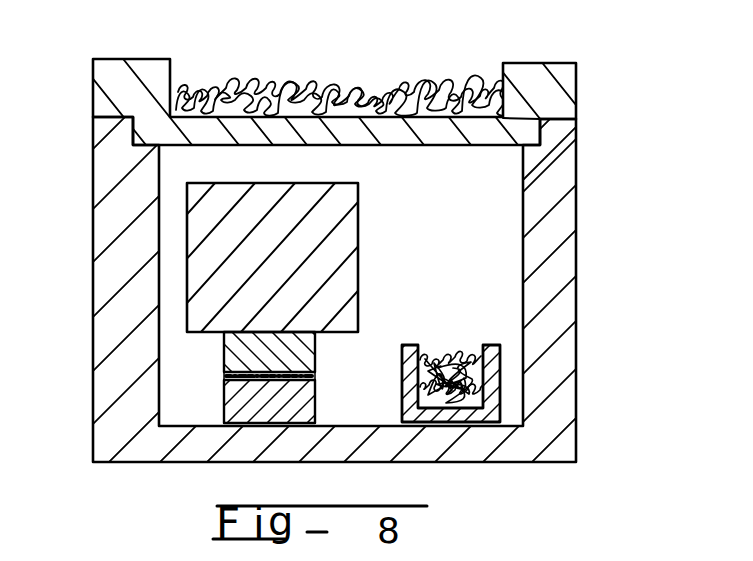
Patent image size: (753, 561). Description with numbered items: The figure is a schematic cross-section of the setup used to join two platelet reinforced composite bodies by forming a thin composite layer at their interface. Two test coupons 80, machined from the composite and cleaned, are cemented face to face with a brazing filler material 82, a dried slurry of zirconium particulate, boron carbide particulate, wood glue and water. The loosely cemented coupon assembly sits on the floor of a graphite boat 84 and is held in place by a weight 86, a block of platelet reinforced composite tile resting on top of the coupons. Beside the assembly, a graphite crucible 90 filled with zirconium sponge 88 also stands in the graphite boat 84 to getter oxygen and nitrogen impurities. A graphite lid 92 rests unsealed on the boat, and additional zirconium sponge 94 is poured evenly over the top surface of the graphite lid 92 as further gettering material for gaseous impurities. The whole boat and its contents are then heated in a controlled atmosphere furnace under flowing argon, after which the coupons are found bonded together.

The test coupons 80 is at (227, 352).
The brazing filler material 82 is at (233, 377).
The graphite boat 84 is at (548, 232).
The weight 86 is at (220, 228).
The zirconium sponge 88 is at (457, 350).
The graphite crucible 90 is at (500, 390).
The graphite lid 92 is at (553, 100).
The additional zirconium sponge 94 is at (325, 74).